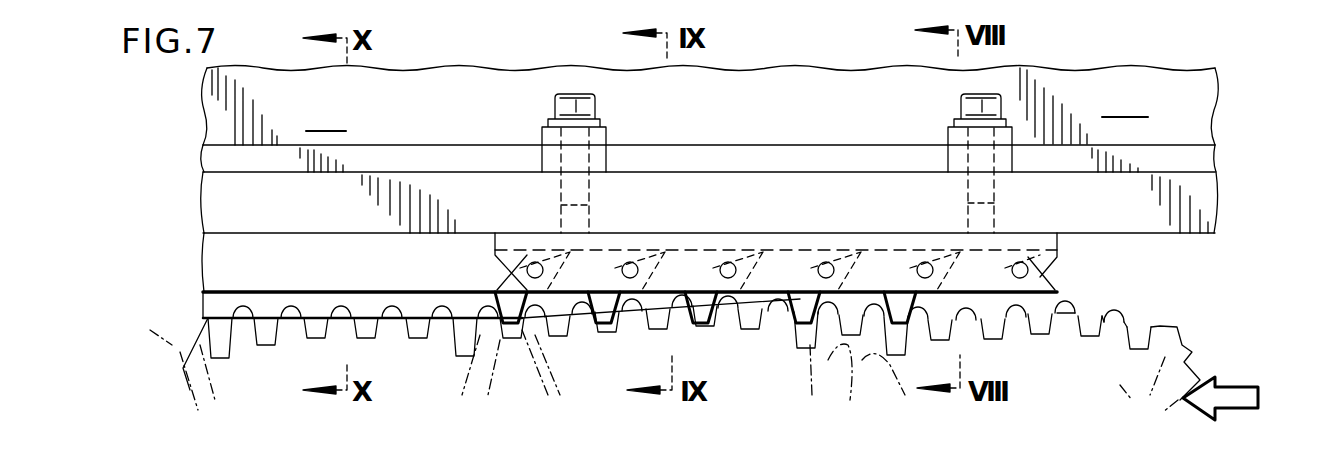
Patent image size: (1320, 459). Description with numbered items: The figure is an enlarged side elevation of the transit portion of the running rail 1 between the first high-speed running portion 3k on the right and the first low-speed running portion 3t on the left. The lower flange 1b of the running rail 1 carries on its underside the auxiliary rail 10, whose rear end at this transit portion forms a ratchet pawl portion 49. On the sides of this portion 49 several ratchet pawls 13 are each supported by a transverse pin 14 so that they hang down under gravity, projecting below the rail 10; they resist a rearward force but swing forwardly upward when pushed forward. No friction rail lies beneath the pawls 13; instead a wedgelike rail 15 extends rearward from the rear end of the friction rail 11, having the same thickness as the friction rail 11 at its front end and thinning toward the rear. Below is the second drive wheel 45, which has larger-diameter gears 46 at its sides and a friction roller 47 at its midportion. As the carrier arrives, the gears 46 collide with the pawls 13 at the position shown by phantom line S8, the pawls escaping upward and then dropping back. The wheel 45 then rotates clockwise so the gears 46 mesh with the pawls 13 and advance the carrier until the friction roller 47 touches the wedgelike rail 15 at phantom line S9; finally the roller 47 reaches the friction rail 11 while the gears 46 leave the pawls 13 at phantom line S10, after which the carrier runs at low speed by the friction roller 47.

The running rail 1 is at (1200, 98).
The lower flange 1b is at (1200, 192).
The first low-speed running portion 3t is at (326, 116).
The first high-speed running portion 3k is at (1125, 103).
The auxiliary rail 10 is at (205, 250).
The friction rail 11 is at (210, 300).
The ratchet pawls 13 is at (513, 323).
The transverse pin 14 is at (533, 262).
The wedgelike rail 15 is at (557, 310).
The second drive wheel 45 is at (185, 355).
The gears 46 is at (283, 292).
The friction roller 47 is at (425, 305).
The ratchet pawl portion 49 is at (896, 233).
The phantom line S8 is at (1097, 312).
The phantom line S9 is at (575, 330).
The phantom line S10 is at (345, 305).